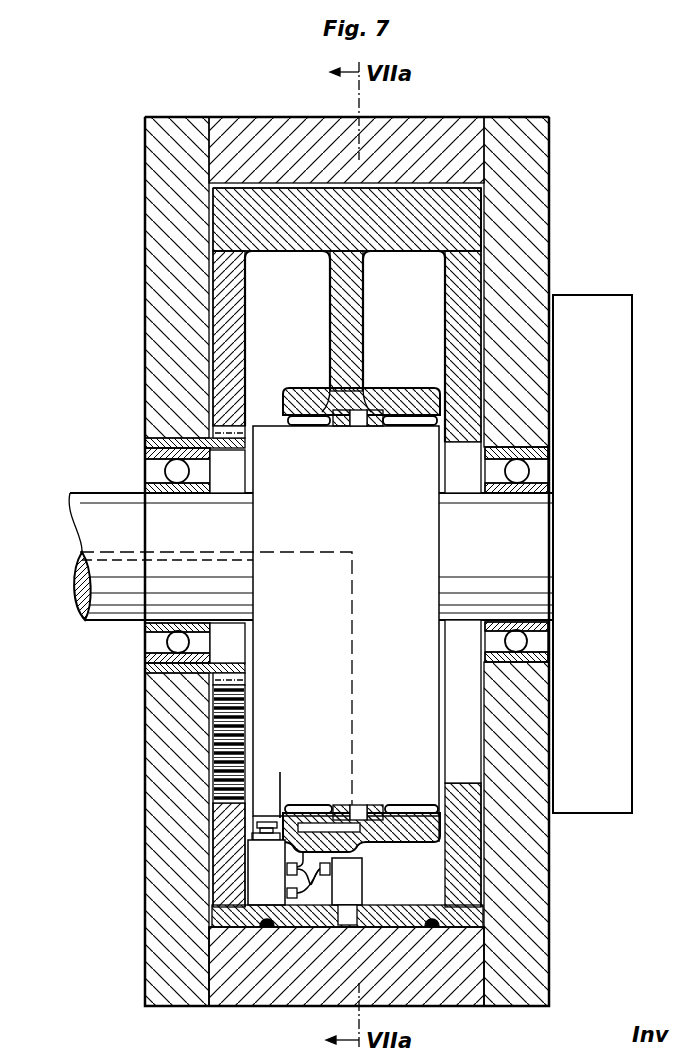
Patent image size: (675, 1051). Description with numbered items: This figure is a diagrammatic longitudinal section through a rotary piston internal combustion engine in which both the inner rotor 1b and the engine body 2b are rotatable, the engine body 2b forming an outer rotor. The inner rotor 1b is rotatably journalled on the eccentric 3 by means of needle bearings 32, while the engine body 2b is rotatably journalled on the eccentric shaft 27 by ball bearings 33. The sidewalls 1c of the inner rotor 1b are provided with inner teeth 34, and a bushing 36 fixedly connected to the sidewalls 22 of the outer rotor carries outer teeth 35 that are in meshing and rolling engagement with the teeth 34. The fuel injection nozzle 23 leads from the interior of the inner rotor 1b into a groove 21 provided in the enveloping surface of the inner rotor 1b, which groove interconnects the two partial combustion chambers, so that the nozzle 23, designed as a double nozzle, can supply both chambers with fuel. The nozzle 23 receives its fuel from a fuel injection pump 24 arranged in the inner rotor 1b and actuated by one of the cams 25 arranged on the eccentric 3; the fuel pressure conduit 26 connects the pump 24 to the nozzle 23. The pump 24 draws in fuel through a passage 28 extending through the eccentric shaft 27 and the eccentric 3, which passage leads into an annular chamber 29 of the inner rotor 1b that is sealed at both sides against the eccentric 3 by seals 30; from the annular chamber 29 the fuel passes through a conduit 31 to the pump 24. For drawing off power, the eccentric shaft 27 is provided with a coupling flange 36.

The engine body 2b is at (422, 128).
The sidewalls of the outer rotor 22 is at (165, 287).
The sidewalls of the inner rotor 1c is at (242, 309).
The seals 30 is at (335, 412).
The needle bearings 32 is at (312, 425).
The bushing 36 is at (596, 813).
The eccentric shaft 27 is at (98, 506).
The ball bearings 33 is at (197, 620).
The passage 28 is at (356, 600).
The outer teeth 35 is at (243, 683).
The eccentric 3 is at (260, 708).
The inner teeth 34 is at (246, 782).
The cams 25 is at (271, 813).
The conduit 31 is at (307, 857).
The annular chamber 29 is at (361, 805).
The fuel injection pump 24 is at (250, 871).
The fuel injection nozzle 23 is at (358, 882).
The inner rotor 1b is at (470, 913).
The fuel pressure conduit 26 is at (308, 892).
The groove 21 is at (349, 925).